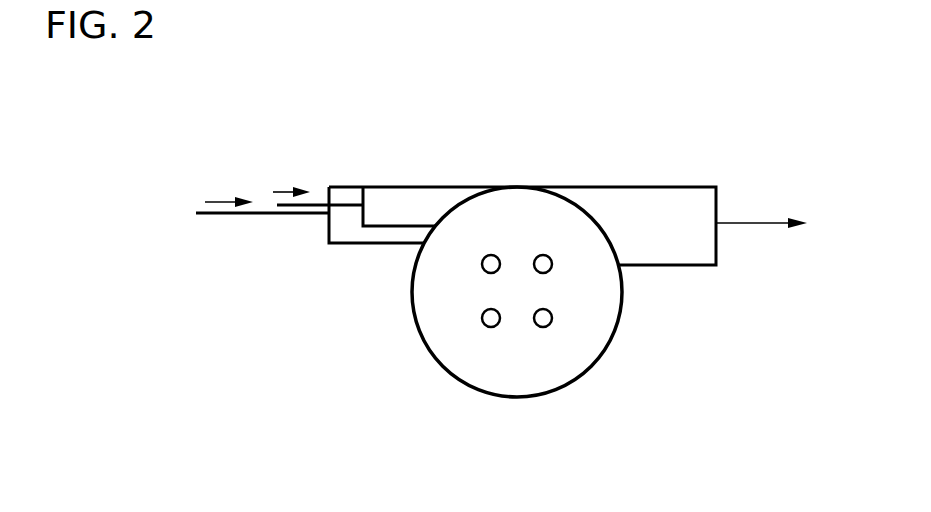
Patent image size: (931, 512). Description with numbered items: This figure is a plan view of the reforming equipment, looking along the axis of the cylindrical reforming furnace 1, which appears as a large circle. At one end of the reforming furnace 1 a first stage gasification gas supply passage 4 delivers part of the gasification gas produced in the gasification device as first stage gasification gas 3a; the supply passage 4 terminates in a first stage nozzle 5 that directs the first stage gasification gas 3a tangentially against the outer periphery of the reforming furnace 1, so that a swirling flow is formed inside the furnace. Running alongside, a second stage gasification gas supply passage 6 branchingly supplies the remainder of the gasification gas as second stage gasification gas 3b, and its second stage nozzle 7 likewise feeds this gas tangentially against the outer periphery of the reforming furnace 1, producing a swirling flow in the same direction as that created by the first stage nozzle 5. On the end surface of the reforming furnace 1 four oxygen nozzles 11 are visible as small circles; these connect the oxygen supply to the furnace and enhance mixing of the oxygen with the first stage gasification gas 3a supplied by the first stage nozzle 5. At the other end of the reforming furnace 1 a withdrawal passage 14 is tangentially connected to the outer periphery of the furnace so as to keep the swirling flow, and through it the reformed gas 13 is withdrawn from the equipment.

The reforming furnace 1 is at (472, 387).
The first stage gasification gas 3a is at (277, 190).
The second stage gasification gas 3b is at (213, 200).
The first stage gasification gas supply passage 4 is at (318, 207).
The first stage nozzle 5 is at (408, 202).
The second stage gasification gas supply passage 6 is at (258, 214).
The second stage nozzle 7 is at (348, 228).
The oxygen nozzles 11 is at (491, 327).
The reformed gas 13 is at (758, 222).
The withdrawal passage 14 is at (668, 187).